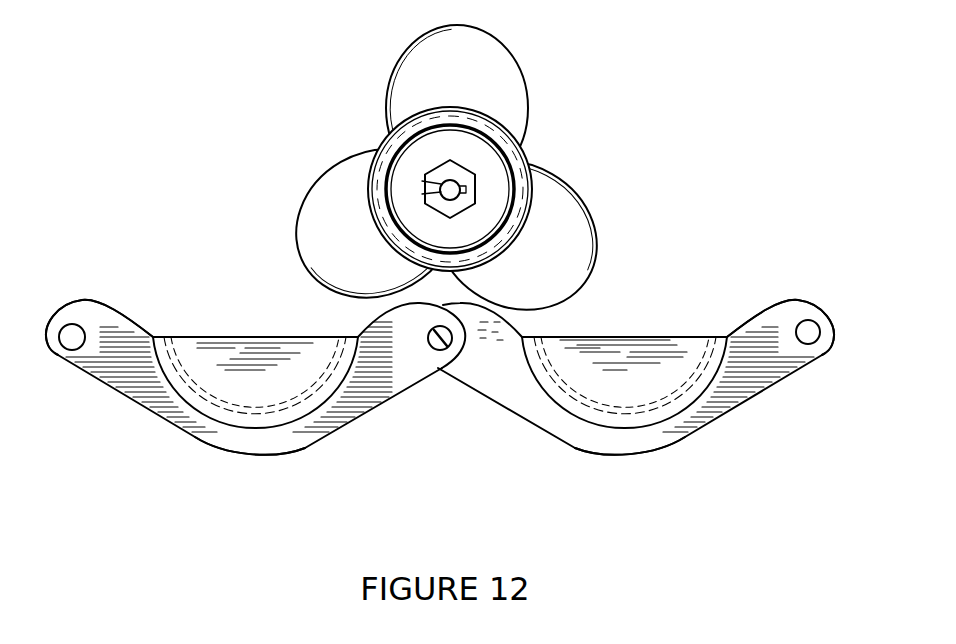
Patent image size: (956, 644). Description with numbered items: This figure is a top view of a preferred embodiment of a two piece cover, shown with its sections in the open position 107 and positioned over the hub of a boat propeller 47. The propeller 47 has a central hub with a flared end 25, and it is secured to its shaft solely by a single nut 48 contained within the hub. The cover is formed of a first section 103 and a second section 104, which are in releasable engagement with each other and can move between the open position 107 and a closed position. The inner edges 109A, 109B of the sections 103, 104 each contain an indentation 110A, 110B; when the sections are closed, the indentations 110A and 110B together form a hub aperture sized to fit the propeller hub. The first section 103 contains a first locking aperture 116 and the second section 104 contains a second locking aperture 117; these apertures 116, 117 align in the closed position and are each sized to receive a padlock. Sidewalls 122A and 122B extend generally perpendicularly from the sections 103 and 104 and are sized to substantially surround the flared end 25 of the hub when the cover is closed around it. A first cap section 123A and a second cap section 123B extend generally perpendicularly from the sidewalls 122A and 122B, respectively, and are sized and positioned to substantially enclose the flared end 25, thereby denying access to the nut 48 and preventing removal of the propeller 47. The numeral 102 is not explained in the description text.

The boat propeller 47 is at (470, 78).
The nut 48 is at (445, 172).
The flared end 25 is at (525, 167).
The first section 103 is at (128, 385).
The second section 104 is at (757, 393).
The inner edge 109A is at (97, 300).
The inner edge 109B is at (787, 298).
The first locking aperture 116 is at (70, 338).
The second locking aperture 117 is at (810, 330).
The indentation 110A is at (186, 315).
The indentation 110B is at (687, 306).
The first cap section 123A is at (247, 372).
The second cap section 123B is at (560, 353).
The sidewall 122A is at (227, 423).
The sidewall 122B is at (675, 415).
The pivot lobes of arms 102 is at (388, 380).
The open position 107 is at (438, 426).